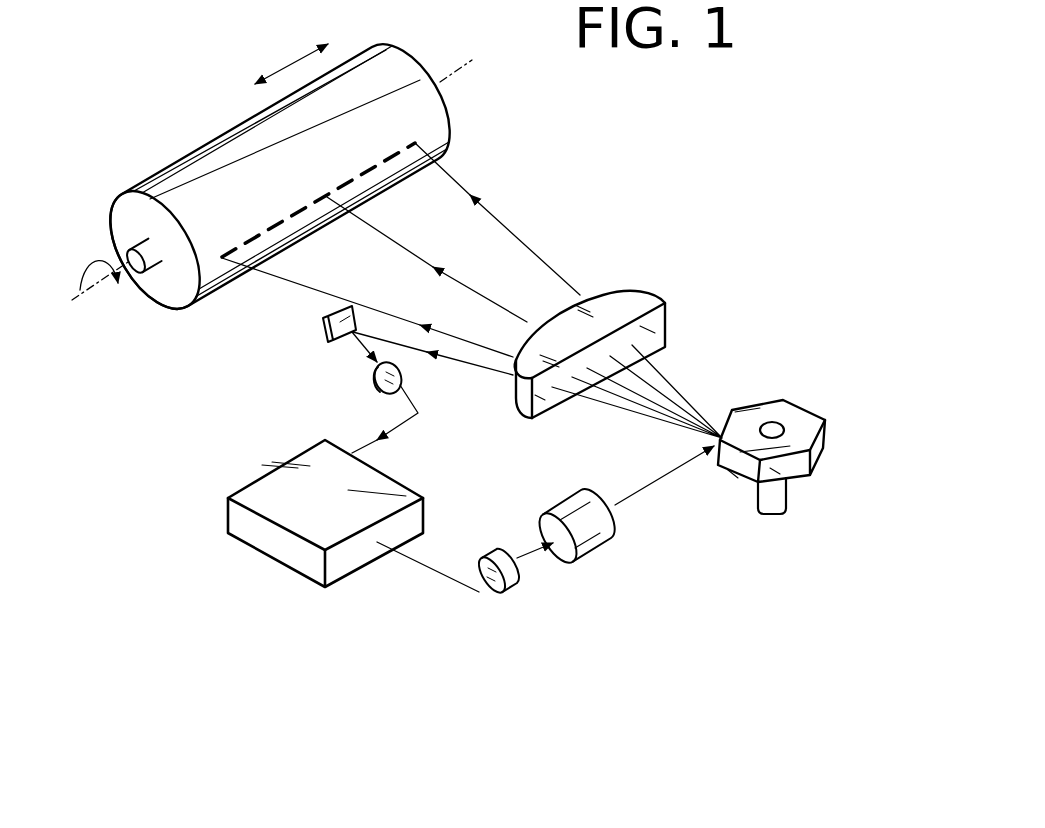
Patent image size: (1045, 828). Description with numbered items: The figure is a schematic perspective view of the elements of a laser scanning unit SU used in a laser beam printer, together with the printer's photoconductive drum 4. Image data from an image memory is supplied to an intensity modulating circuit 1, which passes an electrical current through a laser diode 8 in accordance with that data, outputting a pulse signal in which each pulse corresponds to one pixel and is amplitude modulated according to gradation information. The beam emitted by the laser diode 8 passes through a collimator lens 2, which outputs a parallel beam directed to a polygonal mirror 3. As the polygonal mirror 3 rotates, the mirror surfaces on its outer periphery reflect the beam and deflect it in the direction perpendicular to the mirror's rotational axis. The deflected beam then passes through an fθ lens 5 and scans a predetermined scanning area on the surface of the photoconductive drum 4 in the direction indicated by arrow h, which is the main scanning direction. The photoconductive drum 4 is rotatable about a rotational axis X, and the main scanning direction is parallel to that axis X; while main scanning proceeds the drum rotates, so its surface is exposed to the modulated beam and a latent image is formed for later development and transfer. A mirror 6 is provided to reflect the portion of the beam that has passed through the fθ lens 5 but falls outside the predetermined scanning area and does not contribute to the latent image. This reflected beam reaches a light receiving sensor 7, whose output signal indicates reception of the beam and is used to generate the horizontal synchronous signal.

The intensity modulating circuit 1 is at (273, 487).
The collimator lens 2 is at (590, 537).
The polygonal mirror 3 is at (800, 418).
The photoconductive drum 4 is at (207, 167).
The fθ lens 5 is at (625, 303).
The mirror 6 is at (327, 335).
The light receiving sensor 7 is at (377, 390).
The laser diode 8 is at (493, 593).
The laser scanning unit SU is at (704, 233).
The main scanning direction arrow h is at (291, 61).
The rotational axis X is at (82, 293).